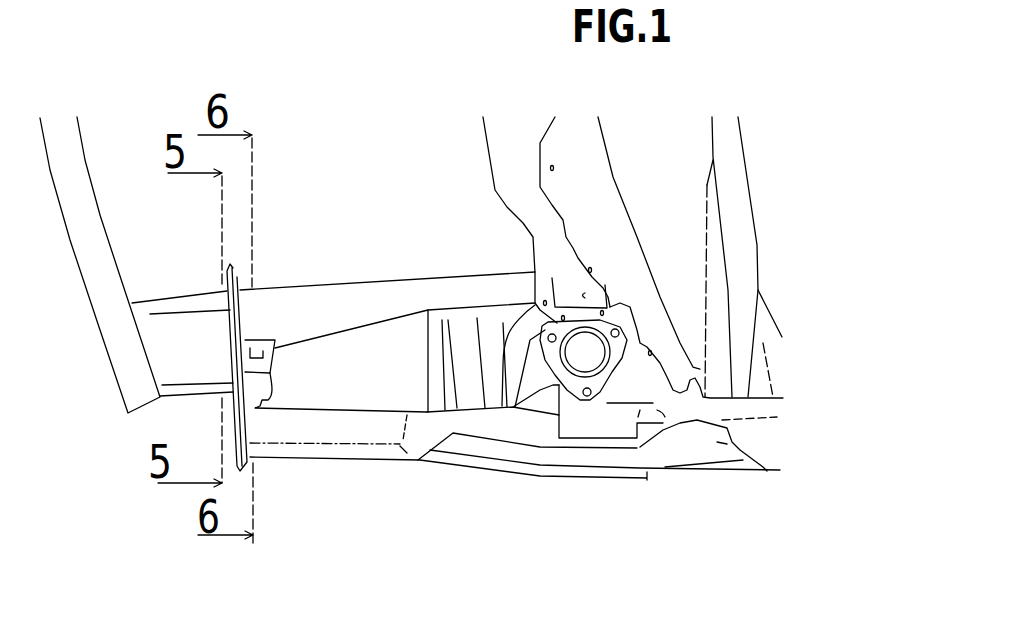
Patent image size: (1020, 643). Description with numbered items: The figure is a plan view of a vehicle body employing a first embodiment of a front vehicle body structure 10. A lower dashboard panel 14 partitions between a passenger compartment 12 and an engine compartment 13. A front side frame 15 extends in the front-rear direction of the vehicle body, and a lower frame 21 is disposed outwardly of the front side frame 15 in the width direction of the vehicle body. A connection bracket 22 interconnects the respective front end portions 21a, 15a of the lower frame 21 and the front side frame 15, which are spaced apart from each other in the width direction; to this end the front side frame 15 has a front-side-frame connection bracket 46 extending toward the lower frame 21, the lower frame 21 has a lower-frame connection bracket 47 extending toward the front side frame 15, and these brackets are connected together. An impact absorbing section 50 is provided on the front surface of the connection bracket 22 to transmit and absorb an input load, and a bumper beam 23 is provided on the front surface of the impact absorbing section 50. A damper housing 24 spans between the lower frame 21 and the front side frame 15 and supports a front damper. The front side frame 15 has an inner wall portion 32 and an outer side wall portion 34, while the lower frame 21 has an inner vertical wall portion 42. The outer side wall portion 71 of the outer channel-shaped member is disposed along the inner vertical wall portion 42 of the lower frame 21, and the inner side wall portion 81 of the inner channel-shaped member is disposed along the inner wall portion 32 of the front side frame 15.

The front vehicle body structure 10 is at (141, 58).
The passenger compartment 12 is at (799, 143).
The engine compartment 13 is at (374, 136).
The lower dashboard panel 14 is at (680, 324).
The front side frame 15 is at (330, 285).
The front end portion of the front side frame 15a is at (255, 298).
The lower frame 21 is at (338, 466).
The front end portion of the lower frame 21a is at (262, 435).
The connection bracket 22 is at (242, 262).
The bumper beam 23 is at (107, 353).
The damper housing 24 is at (548, 392).
The inner wall portion 32 is at (354, 288).
The outer side wall portion 34 is at (252, 352).
The inner vertical wall portion 42 is at (358, 408).
The front-side-frame connection bracket 46 is at (276, 349).
The lower-frame connection bracket 47 is at (278, 386).
The impact absorbing section 50 is at (147, 294).
The outer side wall portion 71 is at (183, 398).
The inner side wall portion 81 is at (174, 298).